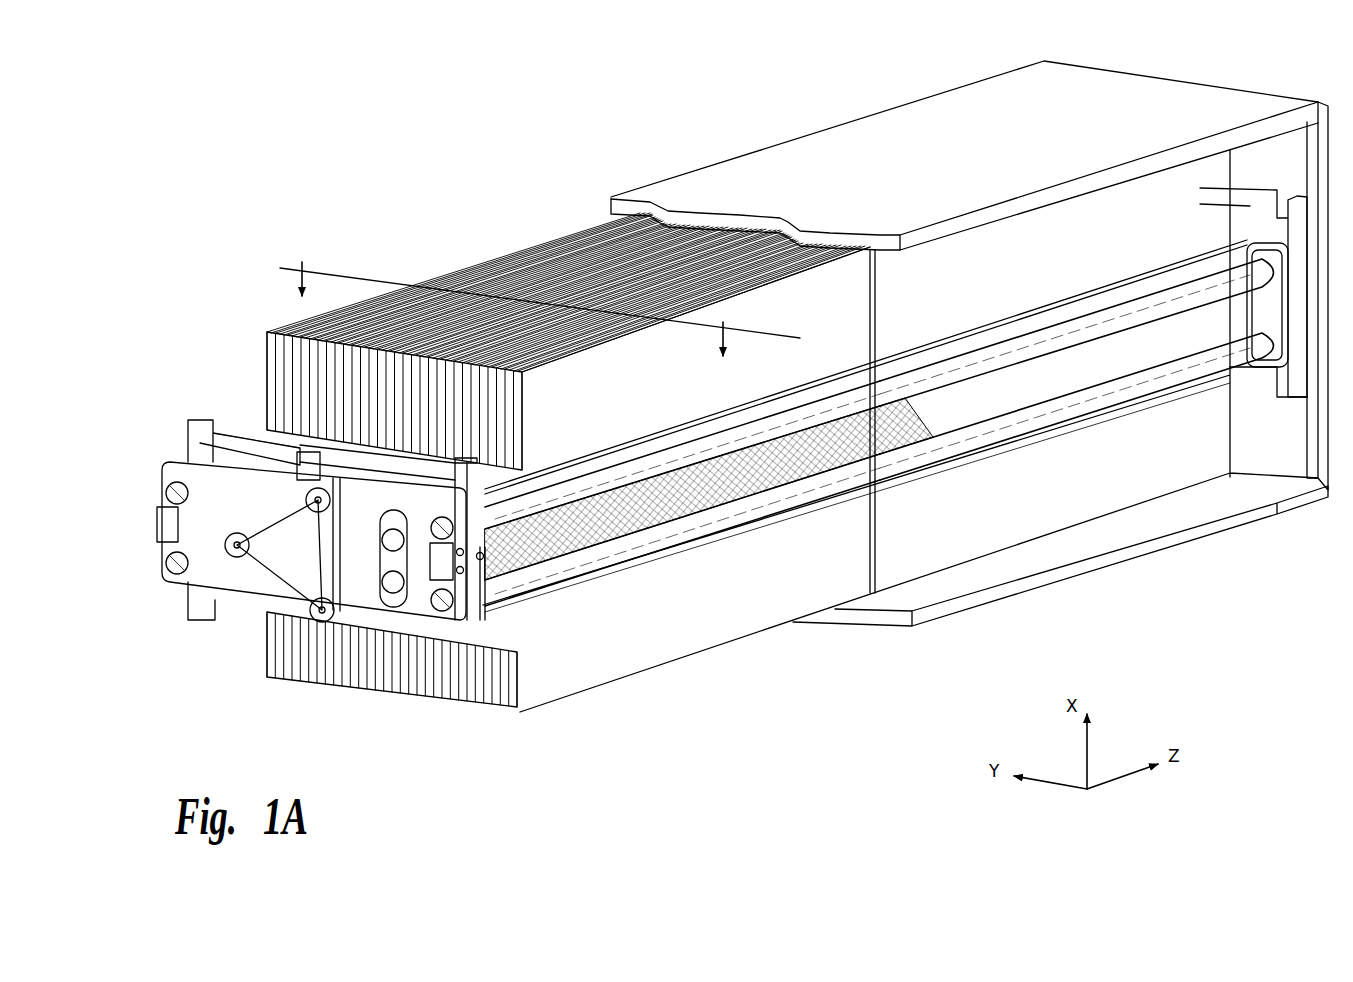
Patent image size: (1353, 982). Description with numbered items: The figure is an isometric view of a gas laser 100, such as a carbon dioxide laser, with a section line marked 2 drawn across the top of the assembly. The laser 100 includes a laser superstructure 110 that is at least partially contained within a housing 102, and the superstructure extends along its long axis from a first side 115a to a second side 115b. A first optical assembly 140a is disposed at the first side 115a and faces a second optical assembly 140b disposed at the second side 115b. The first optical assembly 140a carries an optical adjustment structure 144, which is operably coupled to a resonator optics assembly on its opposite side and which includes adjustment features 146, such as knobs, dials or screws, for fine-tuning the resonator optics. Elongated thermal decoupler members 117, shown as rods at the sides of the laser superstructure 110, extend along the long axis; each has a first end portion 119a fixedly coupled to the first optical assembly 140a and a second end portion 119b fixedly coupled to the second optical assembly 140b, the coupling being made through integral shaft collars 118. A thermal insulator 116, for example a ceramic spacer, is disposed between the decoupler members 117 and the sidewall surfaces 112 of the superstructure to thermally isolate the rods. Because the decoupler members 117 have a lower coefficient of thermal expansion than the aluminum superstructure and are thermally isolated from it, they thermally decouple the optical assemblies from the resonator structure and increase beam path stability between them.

The laser 100 is at (379, 77).
The housing 102 is at (850, 128).
The section line 2 is at (540, 294).
The laser superstructure 110 is at (505, 600).
The sidewall surfaces 112 is at (1087, 383).
The first side 115a is at (244, 409).
The second side 115b is at (1244, 396).
The thermal insulator 116 is at (925, 414).
The thermal decoupler members 117 is at (795, 425).
The integral shaft collars 118 is at (190, 582).
The first end portion 119a is at (505, 530).
The second end portion 119b is at (1265, 272).
The first optical assembly 140a is at (228, 610).
The second optical assembly 140b is at (1262, 228).
The optical adjustment structure 144 is at (355, 493).
The adjustment features 146 is at (310, 500).